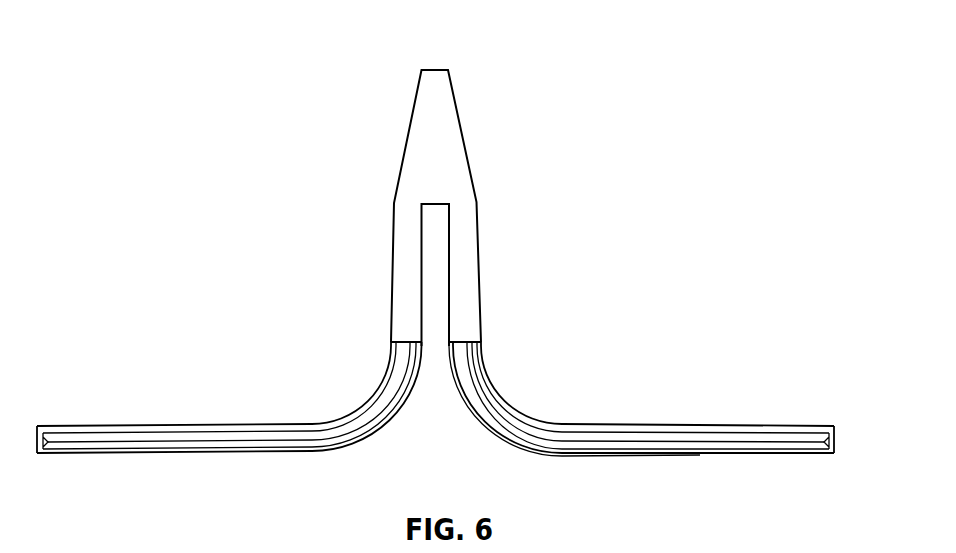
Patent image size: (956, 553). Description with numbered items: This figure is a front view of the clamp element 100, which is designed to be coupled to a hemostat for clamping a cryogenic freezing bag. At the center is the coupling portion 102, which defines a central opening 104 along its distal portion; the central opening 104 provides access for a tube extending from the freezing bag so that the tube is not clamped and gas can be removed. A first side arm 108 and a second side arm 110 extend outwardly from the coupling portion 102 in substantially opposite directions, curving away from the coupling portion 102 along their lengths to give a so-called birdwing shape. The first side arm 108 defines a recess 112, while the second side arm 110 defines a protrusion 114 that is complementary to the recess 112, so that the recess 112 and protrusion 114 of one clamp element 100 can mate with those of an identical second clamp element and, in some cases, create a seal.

The clamp element 100 is at (190, 57).
The coupling portion 102 is at (470, 254).
The central opening 104 is at (445, 302).
The first side arm 108 is at (745, 425).
The second side arm 110 is at (158, 425).
The recess 112 is at (803, 455).
The protrusion 114 is at (60, 447).